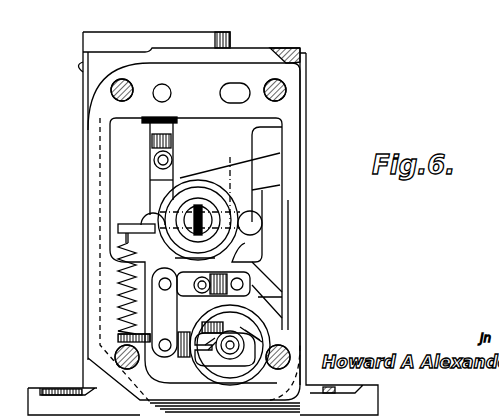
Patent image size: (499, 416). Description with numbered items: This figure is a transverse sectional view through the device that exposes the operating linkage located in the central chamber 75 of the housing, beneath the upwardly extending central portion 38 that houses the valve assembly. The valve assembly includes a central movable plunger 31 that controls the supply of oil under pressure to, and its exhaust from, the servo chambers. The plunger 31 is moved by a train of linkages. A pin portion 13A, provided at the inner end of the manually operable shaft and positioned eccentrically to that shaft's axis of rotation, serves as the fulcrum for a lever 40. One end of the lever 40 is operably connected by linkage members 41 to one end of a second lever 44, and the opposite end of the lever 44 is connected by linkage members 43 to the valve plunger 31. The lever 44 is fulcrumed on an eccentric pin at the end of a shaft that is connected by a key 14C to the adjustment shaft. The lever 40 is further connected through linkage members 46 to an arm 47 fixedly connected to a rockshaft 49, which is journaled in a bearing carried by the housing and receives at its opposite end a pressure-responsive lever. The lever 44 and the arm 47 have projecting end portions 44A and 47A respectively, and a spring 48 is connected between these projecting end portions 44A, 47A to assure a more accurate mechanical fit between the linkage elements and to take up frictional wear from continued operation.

The central portion 38 is at (205, 35).
The valve plunger 31 is at (170, 118).
The central chamber 75 is at (184, 150).
The second lever 44 is at (211, 176).
The key 14C is at (198, 207).
The linkage members 43 is at (162, 180).
The projecting end portion 44A is at (136, 227).
The lever 40 is at (218, 235).
The linkage members 41 is at (247, 247).
The pin portion 13A is at (240, 282).
The spring 48 is at (125, 283).
The linkage members 46 is at (163, 313).
The arm 47 is at (209, 334).
The projecting end portion 47A is at (133, 343).
The rockshaft 49 is at (265, 340).